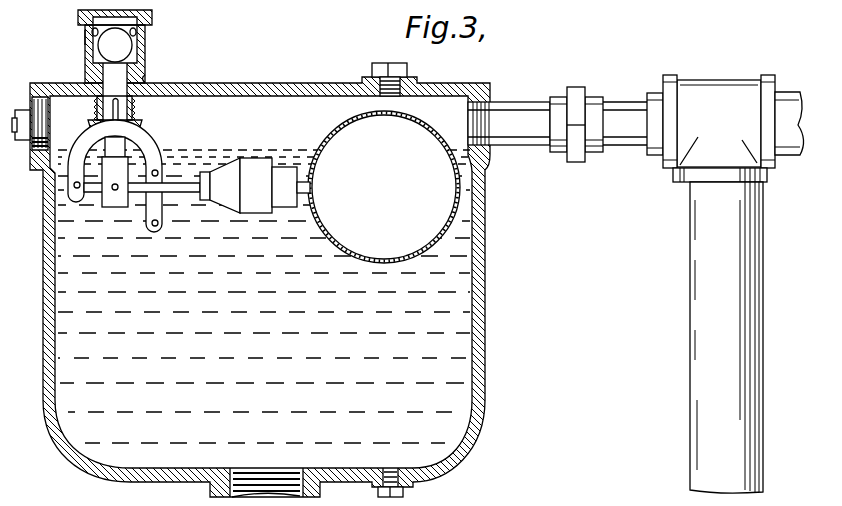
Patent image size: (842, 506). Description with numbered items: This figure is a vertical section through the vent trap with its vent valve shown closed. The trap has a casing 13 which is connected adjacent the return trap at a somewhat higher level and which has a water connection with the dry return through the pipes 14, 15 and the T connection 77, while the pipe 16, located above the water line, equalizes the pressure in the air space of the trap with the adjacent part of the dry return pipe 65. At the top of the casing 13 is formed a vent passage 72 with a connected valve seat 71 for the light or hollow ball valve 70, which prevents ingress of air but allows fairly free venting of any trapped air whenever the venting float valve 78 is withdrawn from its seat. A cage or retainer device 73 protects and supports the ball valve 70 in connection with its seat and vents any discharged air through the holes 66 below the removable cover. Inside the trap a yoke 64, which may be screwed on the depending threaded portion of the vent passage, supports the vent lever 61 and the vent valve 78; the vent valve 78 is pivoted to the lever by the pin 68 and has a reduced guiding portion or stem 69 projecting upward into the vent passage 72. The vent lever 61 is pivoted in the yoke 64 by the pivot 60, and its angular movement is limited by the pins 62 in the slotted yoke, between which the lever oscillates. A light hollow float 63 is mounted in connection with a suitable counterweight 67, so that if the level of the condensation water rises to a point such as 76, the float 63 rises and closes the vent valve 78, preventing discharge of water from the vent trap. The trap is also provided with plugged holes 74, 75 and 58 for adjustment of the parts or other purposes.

The casing 13 is at (125, 481).
The pipe 14 is at (313, 497).
The pipe 15 is at (703, 250).
The pipe 16 is at (523, 137).
The plugged hole 58 is at (20, 106).
The pivot 60 is at (77, 189).
The vent lever 61 is at (185, 192).
The pins 62 is at (160, 171).
The hollow float 63 is at (437, 222).
The yoke 64 is at (163, 147).
The dry return pipe 65 is at (788, 155).
The holes 66 is at (85, 35).
The counterweight 67 is at (260, 172).
The pin 68 is at (115, 190).
The stem 69 is at (140, 111).
The ball valve 70 is at (122, 48).
The valve seat 71 is at (88, 62).
The vent passage 72 is at (135, 87).
The cage 73 is at (152, 23).
The plugged hole 74 is at (373, 70).
The plugged hole 75 is at (395, 454).
The water level point 76 is at (313, 147).
The T connection 77 is at (728, 80).
The vent valve 78 is at (150, 128).